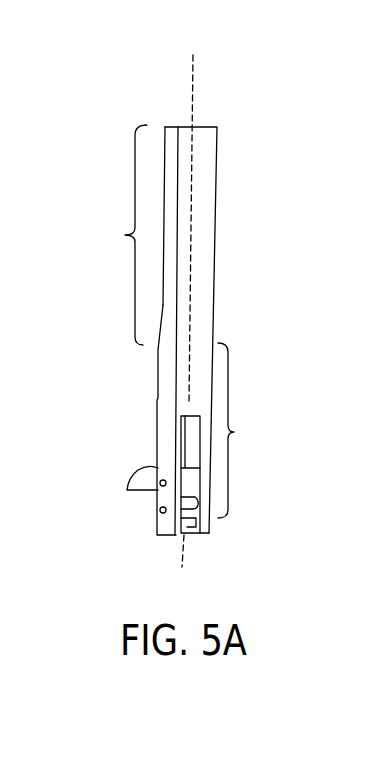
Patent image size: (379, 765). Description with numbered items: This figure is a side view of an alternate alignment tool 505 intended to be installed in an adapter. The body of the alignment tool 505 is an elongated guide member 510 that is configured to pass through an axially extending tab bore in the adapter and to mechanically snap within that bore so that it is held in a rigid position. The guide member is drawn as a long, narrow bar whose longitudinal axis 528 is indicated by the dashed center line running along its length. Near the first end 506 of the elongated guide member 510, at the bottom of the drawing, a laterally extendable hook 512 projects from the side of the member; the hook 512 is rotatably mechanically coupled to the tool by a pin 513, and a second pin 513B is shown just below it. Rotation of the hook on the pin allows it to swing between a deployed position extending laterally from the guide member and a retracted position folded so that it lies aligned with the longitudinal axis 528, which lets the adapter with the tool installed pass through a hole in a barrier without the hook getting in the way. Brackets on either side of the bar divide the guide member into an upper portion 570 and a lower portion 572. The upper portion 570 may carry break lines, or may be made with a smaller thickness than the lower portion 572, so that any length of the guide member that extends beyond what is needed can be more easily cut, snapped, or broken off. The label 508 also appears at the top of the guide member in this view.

The alignment tool 505 is at (125, 110).
The first end 506 is at (203, 533).
The rod 508 is at (210, 125).
The elongated guide member 510 is at (166, 350).
The laterally extendable hook 512 is at (138, 481).
The pin 513 is at (158, 488).
The second aperture 513B is at (158, 513).
The longitudinal axis 528 is at (188, 77).
The upper portion 570 is at (117, 235).
The lower portion 572 is at (243, 430).